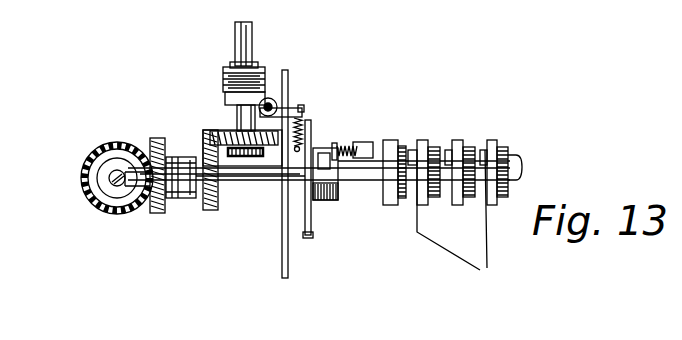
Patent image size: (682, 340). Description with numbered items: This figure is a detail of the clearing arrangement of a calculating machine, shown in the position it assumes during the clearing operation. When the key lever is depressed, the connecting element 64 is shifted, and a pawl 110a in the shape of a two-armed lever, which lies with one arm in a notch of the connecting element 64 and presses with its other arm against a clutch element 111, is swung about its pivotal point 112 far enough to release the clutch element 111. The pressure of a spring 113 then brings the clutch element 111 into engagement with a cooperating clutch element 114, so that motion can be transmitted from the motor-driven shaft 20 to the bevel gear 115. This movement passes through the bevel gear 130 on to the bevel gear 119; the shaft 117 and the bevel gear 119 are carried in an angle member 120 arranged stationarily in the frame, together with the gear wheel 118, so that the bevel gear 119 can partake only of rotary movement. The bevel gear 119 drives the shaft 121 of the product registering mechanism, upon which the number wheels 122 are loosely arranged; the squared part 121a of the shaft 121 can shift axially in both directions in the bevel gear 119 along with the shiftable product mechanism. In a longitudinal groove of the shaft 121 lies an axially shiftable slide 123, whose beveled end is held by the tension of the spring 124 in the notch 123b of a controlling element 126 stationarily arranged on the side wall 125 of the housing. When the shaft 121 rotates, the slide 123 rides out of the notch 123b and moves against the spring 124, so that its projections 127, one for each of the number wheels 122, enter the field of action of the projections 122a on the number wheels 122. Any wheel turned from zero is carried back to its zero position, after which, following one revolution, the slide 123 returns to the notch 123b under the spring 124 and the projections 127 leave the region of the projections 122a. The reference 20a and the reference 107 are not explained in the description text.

The shaft 20 is at (252, 35).
The worm 20a is at (205, 136).
The connecting element 64 is at (288, 72).
The shaft 107 is at (258, 181).
The pawl 110a is at (290, 108).
The clutch element 111 is at (235, 66).
The pivotal point 112 is at (226, 94).
The spring 113 is at (225, 70).
The cooperating clutch element 114 is at (240, 124).
The bevel gear 115 is at (302, 116).
The shaft 117 is at (112, 186).
The gear wheel 118 is at (85, 161).
The bevel gear 119 is at (160, 214).
The angle member 120 is at (183, 197).
The shaft 121 is at (517, 162).
The squared part of the shaft 121a is at (237, 173).
The number wheels 122 is at (457, 201).
The projections 122a is at (464, 222).
The slide 123 is at (371, 145).
The notch 123b is at (342, 183).
The spring 124 is at (340, 147).
The side wall 125 is at (310, 127).
The controlling element 126 is at (327, 201).
The projections 127 is at (457, 132).
The bevel gear 130 is at (218, 118).